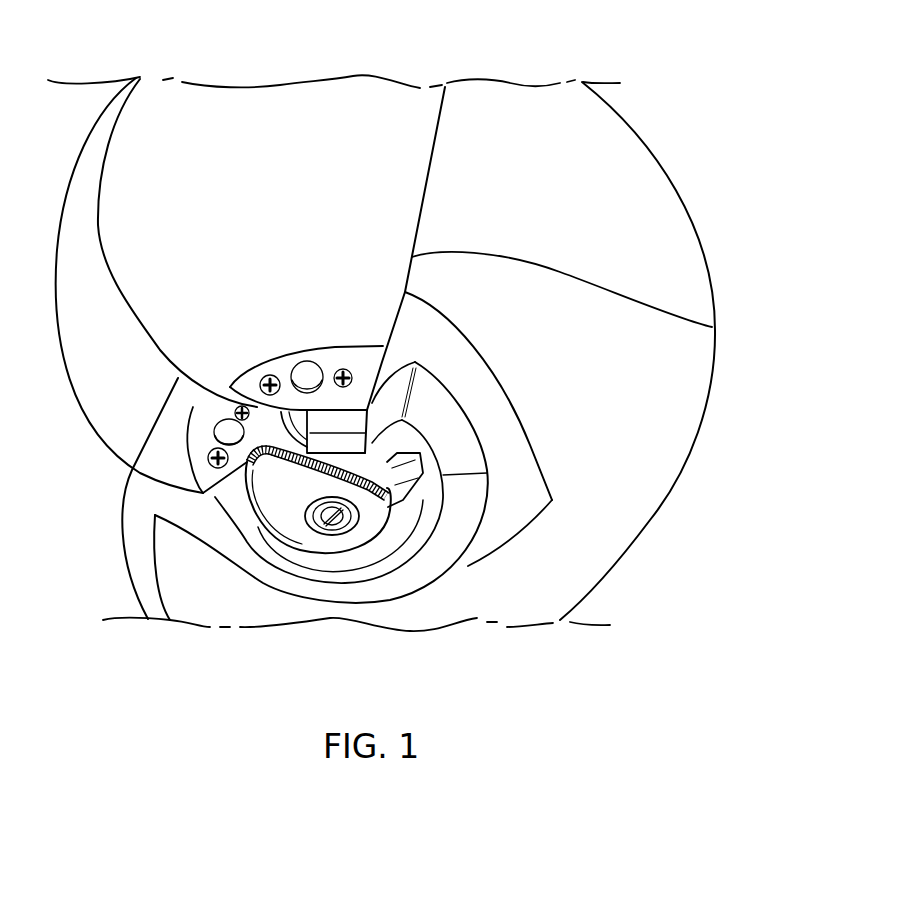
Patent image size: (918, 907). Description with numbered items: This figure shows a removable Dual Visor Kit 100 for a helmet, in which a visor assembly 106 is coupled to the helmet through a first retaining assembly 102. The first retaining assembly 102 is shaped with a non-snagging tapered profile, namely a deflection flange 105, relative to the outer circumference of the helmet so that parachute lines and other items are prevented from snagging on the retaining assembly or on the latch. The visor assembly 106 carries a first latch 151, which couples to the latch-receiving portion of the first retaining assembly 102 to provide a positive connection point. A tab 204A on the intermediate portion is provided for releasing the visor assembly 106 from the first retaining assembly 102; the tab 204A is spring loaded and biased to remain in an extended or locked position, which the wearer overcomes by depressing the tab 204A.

The removable Dual Visor Kit 100 is at (672, 73).
The visor assembly 106 is at (712, 326).
The first retaining assembly 102 is at (487, 473).
The tab 204A is at (552, 500).
The deflection flange 105 is at (450, 520).
The first latch 151 is at (263, 537).